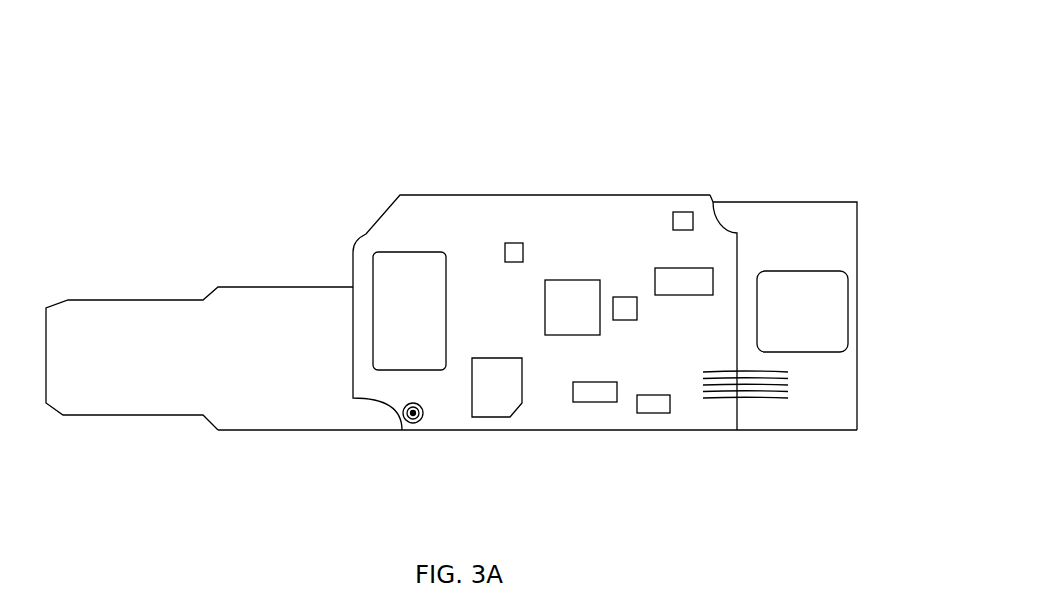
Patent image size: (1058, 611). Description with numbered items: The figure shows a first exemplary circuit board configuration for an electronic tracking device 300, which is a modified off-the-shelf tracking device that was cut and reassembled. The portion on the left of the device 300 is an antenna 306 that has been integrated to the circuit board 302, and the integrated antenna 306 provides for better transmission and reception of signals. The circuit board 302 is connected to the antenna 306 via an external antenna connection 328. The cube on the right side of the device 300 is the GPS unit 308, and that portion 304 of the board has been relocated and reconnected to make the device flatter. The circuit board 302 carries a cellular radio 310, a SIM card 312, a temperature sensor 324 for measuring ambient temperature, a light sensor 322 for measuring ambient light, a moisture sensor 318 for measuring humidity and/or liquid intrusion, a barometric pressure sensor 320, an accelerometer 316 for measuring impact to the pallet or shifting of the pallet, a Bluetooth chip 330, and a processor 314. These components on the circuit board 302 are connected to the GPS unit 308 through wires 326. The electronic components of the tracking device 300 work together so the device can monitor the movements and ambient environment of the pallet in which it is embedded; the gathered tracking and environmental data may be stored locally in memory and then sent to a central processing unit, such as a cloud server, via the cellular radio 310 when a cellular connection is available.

The tracking device 300 is at (484, 76).
The circuit board 302 is at (445, 195).
The portion of the board 304 is at (818, 430).
The antenna 306 is at (152, 300).
The GPS unit 308 is at (837, 313).
The cellular radio 310 is at (396, 252).
The SIM card 312 is at (495, 398).
The processor 314 is at (578, 287).
The accelerometer 316 is at (628, 305).
The moisture sensor 318 is at (516, 245).
The barometric pressure sensor 320 is at (685, 220).
The light sensor 322 is at (660, 407).
The temperature sensor 324 is at (592, 393).
The wires 326 is at (720, 400).
The external antenna connection 328 is at (413, 423).
The Bluetooth chip 330 is at (697, 280).